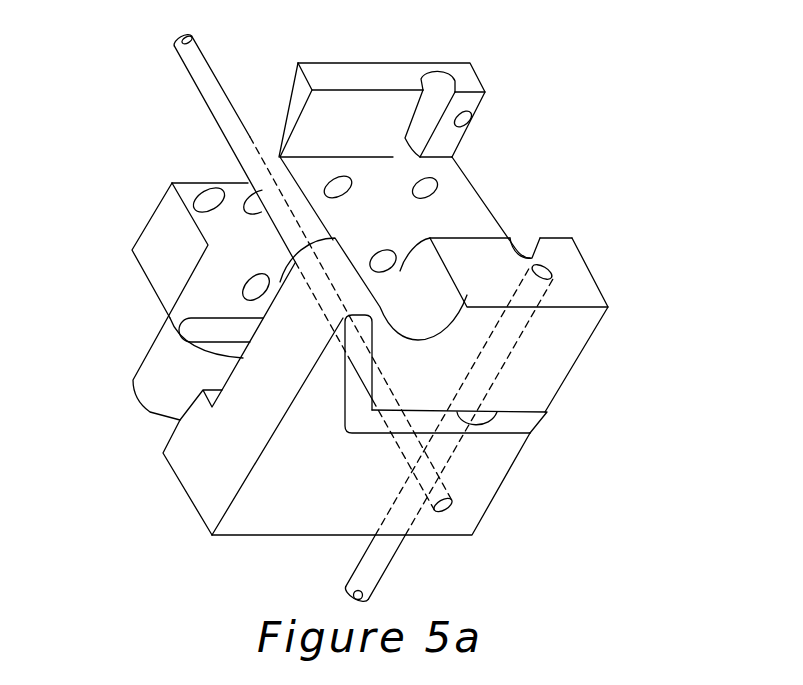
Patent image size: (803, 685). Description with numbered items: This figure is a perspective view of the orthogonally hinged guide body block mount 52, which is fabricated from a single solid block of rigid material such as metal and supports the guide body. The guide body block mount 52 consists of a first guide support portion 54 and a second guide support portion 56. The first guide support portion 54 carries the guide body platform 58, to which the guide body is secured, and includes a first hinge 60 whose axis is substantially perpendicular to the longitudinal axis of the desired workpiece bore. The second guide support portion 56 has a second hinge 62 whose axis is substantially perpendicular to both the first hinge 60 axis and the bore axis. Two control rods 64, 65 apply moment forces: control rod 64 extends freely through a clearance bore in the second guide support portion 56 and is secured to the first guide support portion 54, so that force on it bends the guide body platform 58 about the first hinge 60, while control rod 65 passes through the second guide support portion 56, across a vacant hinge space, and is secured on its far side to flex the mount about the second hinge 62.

The guide body block mount 52 is at (607, 196).
The first guide support portion 54 is at (548, 372).
The second guide support portion 56 is at (480, 502).
The guide body platform 58 is at (460, 216).
The first hinge 60 is at (337, 238).
The second hinge 62 is at (147, 390).
The control rod 64 is at (365, 566).
The control rod 65 is at (193, 68).